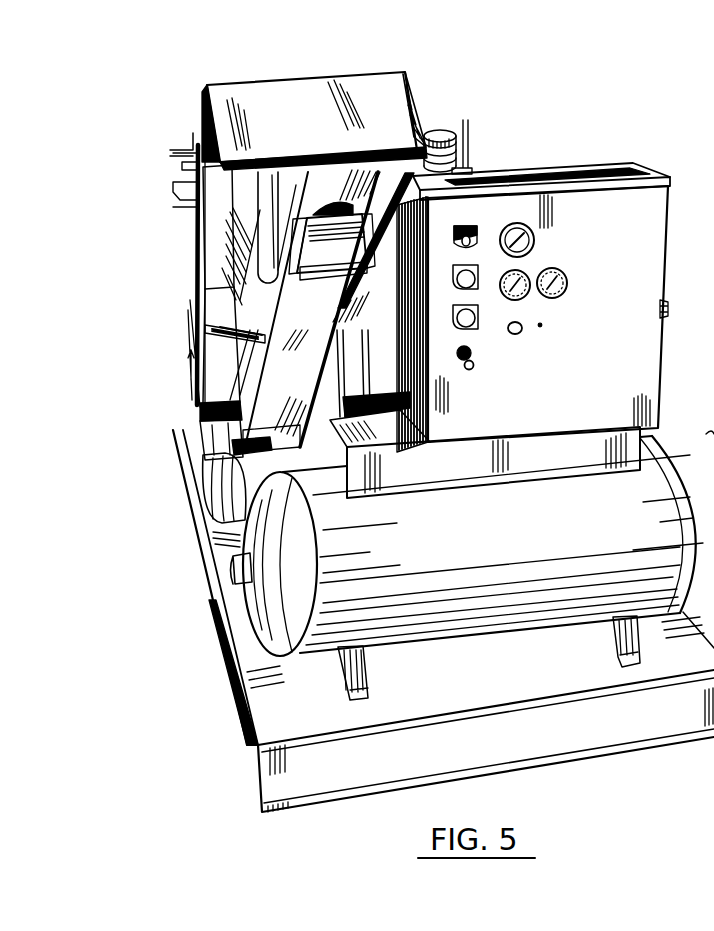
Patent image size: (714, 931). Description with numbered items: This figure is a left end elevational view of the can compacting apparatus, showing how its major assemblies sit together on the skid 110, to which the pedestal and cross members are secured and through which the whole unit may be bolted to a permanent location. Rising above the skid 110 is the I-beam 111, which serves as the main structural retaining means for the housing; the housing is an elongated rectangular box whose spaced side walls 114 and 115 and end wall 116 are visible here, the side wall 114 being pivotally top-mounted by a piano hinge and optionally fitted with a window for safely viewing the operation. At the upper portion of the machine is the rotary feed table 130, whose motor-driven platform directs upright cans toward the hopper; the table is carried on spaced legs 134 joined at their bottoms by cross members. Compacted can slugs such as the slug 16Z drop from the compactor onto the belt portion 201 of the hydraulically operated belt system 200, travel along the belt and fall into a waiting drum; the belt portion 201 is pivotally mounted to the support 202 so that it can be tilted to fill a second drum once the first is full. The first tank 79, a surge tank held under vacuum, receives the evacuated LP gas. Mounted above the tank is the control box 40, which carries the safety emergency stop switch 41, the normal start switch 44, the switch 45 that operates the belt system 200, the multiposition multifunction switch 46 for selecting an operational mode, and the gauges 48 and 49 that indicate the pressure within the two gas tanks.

The I-beam 111 is at (360, 170).
The side wall 115 is at (420, 102).
The rotary feed table 130 is at (445, 122).
The end wall 116 is at (312, 133).
The multiposition multifunction switch 46 is at (468, 226).
The control box 40 is at (636, 229).
The switch 45 is at (480, 276).
The gauge 48 is at (568, 279).
The gauge 49 is at (525, 298).
The start switch 44 is at (476, 327).
The safety emergency stop control switch 41 is at (474, 368).
The can slug 16Z is at (312, 201).
The side wall 114 is at (256, 276).
The belt system 200 is at (249, 344).
The belt portion 201 is at (287, 370).
The leg 134 is at (190, 431).
The support 202 is at (228, 445).
The first tank 79 is at (517, 558).
The skid 110 is at (240, 723).